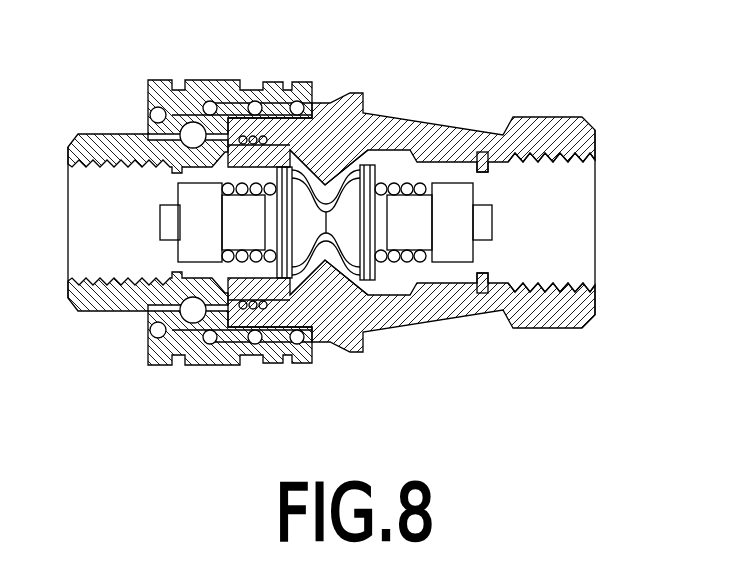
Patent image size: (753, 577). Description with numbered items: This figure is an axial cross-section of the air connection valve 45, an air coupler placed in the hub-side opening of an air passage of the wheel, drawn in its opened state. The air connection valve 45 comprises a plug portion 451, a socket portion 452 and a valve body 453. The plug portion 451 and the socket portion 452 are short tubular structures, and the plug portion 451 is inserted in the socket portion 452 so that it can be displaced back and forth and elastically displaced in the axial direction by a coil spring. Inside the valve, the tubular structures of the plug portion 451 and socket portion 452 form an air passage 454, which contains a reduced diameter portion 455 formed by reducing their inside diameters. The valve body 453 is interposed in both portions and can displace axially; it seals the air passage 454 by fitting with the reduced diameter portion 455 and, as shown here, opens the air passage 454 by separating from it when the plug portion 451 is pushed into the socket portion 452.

The air connection valve 45 is at (497, 79).
The plug portion 451 is at (387, 115).
The socket portion 452 is at (102, 133).
The valve body 453 is at (380, 313).
The air passage 454 is at (567, 203).
The reduced diameter portion 455 is at (338, 246).